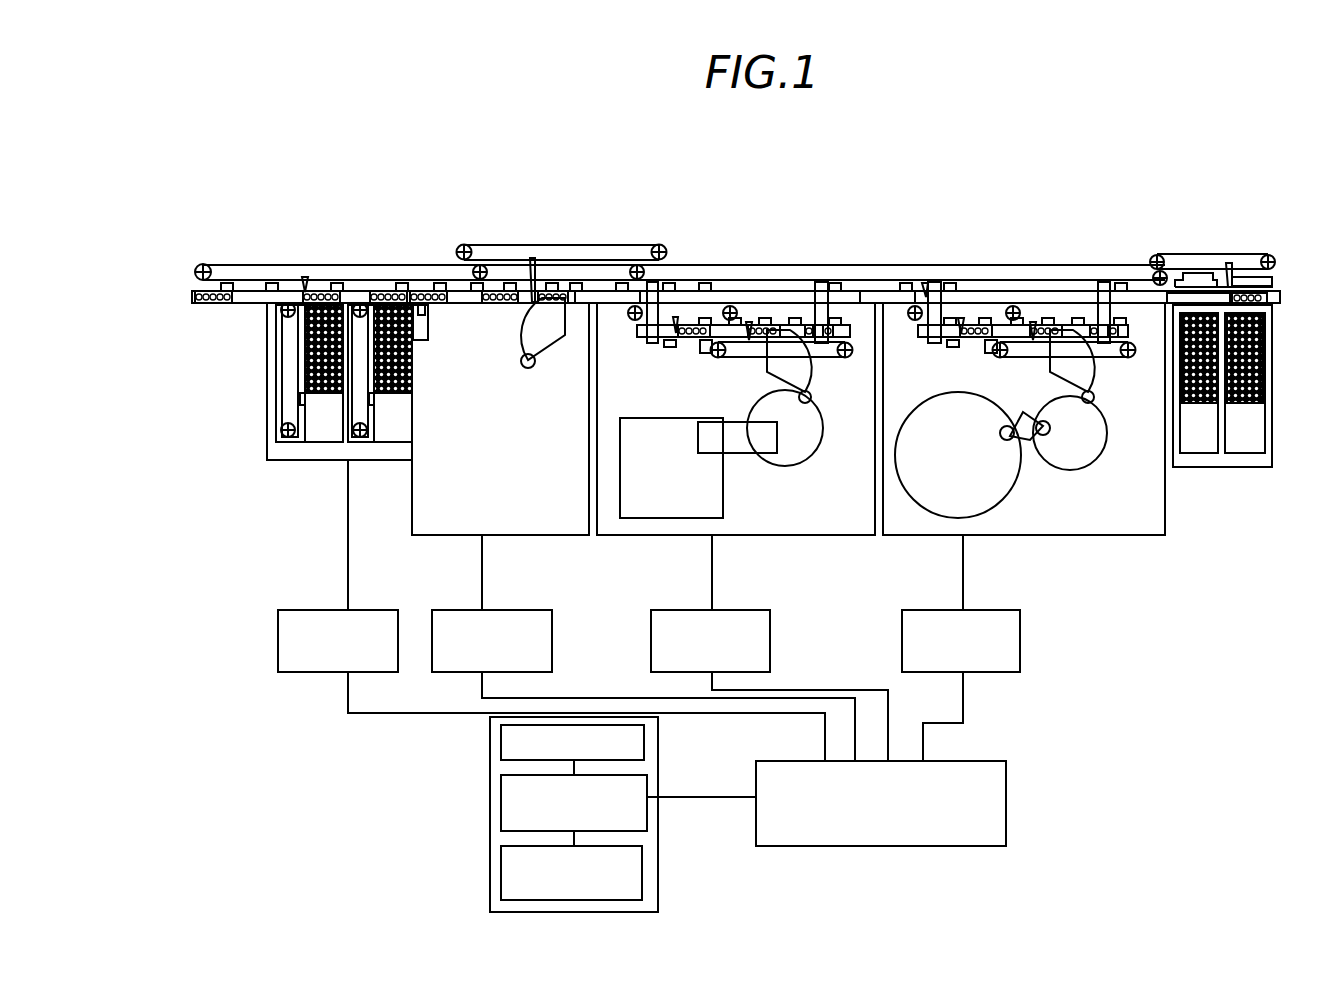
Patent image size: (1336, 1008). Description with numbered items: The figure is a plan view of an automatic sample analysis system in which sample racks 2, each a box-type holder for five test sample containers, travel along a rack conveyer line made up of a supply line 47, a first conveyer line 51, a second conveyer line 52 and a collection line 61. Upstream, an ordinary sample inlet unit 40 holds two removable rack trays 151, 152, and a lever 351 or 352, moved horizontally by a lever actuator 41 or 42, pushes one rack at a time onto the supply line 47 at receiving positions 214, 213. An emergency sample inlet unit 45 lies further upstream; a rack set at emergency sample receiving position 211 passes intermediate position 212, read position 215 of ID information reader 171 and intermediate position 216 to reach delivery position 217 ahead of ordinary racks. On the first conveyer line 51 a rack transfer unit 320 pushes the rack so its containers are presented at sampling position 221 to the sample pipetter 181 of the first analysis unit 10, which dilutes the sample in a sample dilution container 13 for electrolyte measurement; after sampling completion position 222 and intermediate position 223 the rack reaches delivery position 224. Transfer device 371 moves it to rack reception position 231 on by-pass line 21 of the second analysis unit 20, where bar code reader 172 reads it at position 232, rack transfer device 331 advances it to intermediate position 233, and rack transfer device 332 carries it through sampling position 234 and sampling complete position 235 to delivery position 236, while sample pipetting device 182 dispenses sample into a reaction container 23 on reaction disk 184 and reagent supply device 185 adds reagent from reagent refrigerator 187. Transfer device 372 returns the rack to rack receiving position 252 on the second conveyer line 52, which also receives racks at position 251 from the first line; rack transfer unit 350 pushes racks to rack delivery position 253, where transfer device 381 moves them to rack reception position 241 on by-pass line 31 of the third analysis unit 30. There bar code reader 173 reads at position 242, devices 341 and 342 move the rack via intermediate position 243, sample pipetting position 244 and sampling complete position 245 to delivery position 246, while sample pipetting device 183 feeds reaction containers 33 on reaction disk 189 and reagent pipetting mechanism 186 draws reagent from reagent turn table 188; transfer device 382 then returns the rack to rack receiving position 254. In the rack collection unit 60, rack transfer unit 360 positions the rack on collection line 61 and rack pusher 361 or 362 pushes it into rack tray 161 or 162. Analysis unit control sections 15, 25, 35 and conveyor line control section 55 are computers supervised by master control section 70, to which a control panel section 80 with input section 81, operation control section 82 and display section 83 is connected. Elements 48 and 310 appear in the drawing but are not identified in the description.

The sample rack 2 is at (305, 358).
The analysis unit 10 is at (542, 535).
The sample dilution container 13 is at (530, 368).
The analysis unit control section 15 is at (553, 640).
The analysis unit 20 is at (675, 535).
The by-pass line 21 is at (637, 332).
The reaction container 23 is at (808, 404).
The analysis unit control section 25 is at (771, 640).
The analysis unit 30 is at (928, 535).
The by-pass line 31 is at (918, 332).
The reaction container 33 is at (1092, 404).
The analysis unit control section 35 is at (1021, 640).
The ordinary sample inlet unit 40 is at (267, 460).
The lever actuator 41 is at (350, 442).
The lever actuator 42 is at (282, 432).
The emergency sample inlet unit 45 is at (203, 303).
The supply line 47 is at (362, 297).
The conveyor pulley 48 is at (203, 265).
The first conveyer line 51 is at (605, 291).
The second conveyer line 52 is at (898, 291).
The conveyor line control section 55 is at (362, 607).
The rack collection unit 60 is at (1265, 467).
The collection line 61 is at (1193, 295).
The master control section 70 is at (1007, 802).
The control panel section 80 is at (658, 870).
The input section 81 is at (501, 868).
The operation control section 82 is at (501, 797).
The display section 83 is at (501, 740).
The rack tray 151 is at (385, 442).
The rack tray 152 is at (307, 442).
The rack tray 161 is at (1198, 453).
The rack tray 162 is at (1243, 453).
The ID information reader 171 is at (428, 340).
The bar code reader 172 is at (705, 353).
The bar code reader 173 is at (990, 353).
The sample pipetter 181 is at (527, 328).
The sample pipetting device 182 is at (808, 377).
The sample pipetting device 183 is at (1090, 378).
The reaction disk 184 is at (780, 466).
The reagent supply device 185 is at (752, 453).
The reagent pipetting mechanism 186 is at (1022, 442).
The reagent refrigerator 187 is at (622, 518).
The reagent turn table 188 is at (998, 518).
The reaction disk 189 is at (1076, 470).
The emergency sample receiving position 211 is at (227, 283).
The intermediate position 212 is at (272, 283).
The receiving position 213 is at (337, 283).
The receiving position 214 is at (402, 283).
The read position 215 is at (440, 283).
The intermediate position 216 is at (477, 283).
The delivery position 217 is at (510, 283).
The sampling position 221 is at (552, 283).
The sampling completion position 222 is at (573, 245).
The intermediate position 223 is at (576, 283).
The delivery position 224 is at (622, 283).
The rack reception position 231 is at (668, 347).
The ID information read position 232 is at (705, 318).
The intermediate position 233 is at (736, 318).
The sampling position 234 is at (766, 318).
The sampling complete position 235 is at (795, 318).
The delivery position 236 is at (835, 318).
The rack reception position 241 is at (950, 347).
The ID information read position 242 is at (986, 318).
The intermediate position 243 is at (1017, 318).
The sample pipetting position 244 is at (1048, 318).
The sampling complete position 245 is at (1078, 318).
The delivery position 246 is at (1120, 318).
The rack receiving position 251 is at (669, 283).
The rack receiving position 252 is at (835, 283).
The rack delivery position 253 is at (950, 283).
The rack receiving position 254 is at (1121, 283).
The stopper 310 is at (305, 277).
The rack transfer unit 320 is at (532, 258).
The rack transfer device 331 is at (675, 333).
The rack transfer device 332 is at (749, 340).
The rack transfer device 341 is at (960, 334).
The rack transfer device 342 is at (1033, 340).
The rack transfer unit 350 is at (925, 283).
The lever 351 is at (392, 393).
The lever 352 is at (322, 393).
The rack transfer unit 360 is at (1229, 263).
The rack pusher 361 is at (1198, 273).
The rack pusher 362 is at (1253, 277).
The sample rack transfer device 371 is at (652, 282).
The sample rack transfer device 372 is at (812, 282).
The sample rack transfer device 381 is at (933, 282).
The sample rack transfer device 382 is at (1104, 282).